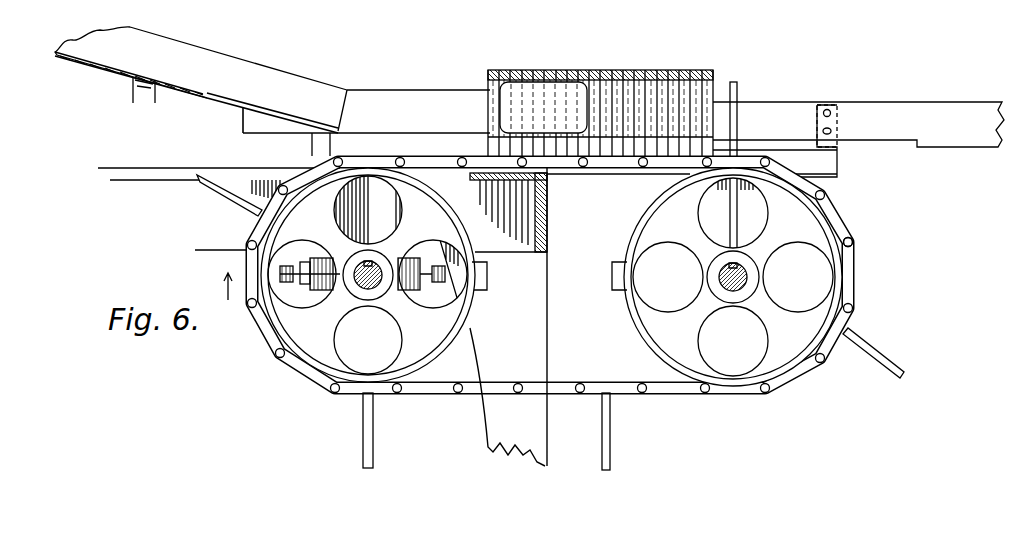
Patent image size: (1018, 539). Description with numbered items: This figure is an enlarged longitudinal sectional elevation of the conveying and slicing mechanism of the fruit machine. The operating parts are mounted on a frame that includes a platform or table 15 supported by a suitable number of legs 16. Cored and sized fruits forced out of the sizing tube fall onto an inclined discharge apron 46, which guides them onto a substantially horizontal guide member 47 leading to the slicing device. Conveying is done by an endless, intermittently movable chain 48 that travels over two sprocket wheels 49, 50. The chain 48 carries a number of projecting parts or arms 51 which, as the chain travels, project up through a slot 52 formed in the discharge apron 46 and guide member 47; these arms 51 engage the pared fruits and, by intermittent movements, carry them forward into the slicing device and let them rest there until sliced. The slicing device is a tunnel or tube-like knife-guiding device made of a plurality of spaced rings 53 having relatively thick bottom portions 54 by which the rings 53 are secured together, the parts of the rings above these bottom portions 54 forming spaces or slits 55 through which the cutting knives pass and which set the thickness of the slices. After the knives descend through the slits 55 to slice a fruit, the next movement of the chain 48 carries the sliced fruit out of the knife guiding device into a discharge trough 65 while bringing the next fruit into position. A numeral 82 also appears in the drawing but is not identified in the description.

The platform or table 15 is at (508, 212).
The legs 16 is at (508, 317).
The inclined discharge apron 46 is at (218, 58).
The horizontal guide member 47 is at (410, 100).
The endless chain 48 is at (570, 384).
The sprocket wheel 49 is at (828, 248).
The sprocket wheel 50 is at (470, 283).
The projecting parts or arms 51 is at (225, 200).
The slot 52 is at (258, 107).
The spaced rings 53 is at (656, 70).
The bottom portions 54 is at (630, 152).
The spaces or slits 55 is at (613, 70).
The discharge trough 65 is at (775, 139).
The element from adjacent figure 82 is at (931, 3).